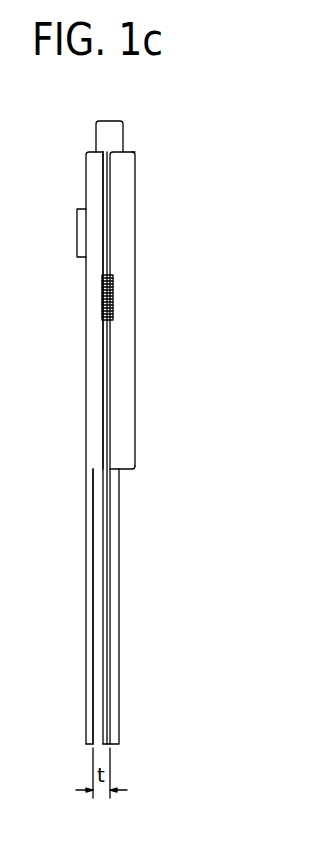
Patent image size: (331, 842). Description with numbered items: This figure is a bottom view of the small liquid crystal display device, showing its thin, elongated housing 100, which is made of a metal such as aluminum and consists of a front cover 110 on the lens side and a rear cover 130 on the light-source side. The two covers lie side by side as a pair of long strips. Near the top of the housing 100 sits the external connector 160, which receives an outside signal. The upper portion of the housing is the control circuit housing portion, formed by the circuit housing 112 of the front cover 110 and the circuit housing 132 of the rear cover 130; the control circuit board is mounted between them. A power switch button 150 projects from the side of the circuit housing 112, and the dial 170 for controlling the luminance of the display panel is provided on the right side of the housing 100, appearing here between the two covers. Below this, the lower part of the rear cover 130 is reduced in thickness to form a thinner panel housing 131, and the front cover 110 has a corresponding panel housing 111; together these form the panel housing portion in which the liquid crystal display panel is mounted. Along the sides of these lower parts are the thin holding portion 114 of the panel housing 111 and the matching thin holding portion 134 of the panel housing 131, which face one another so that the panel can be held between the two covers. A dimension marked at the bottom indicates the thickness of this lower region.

The housing 100 is at (86, 155).
The front cover 110 is at (97, 190).
The panel housing 111 is at (86, 543).
The circuit housing 112 is at (97, 293).
The thin holding portion 114 is at (93, 612).
The rear cover 130 is at (123, 190).
The panel housing 131 is at (120, 540).
The circuit housing 132 is at (137, 310).
The thin holding portion 134 is at (112, 608).
The power switch button 150 is at (80, 238).
The external connector 160 is at (111, 134).
The dial 170 is at (113, 275).